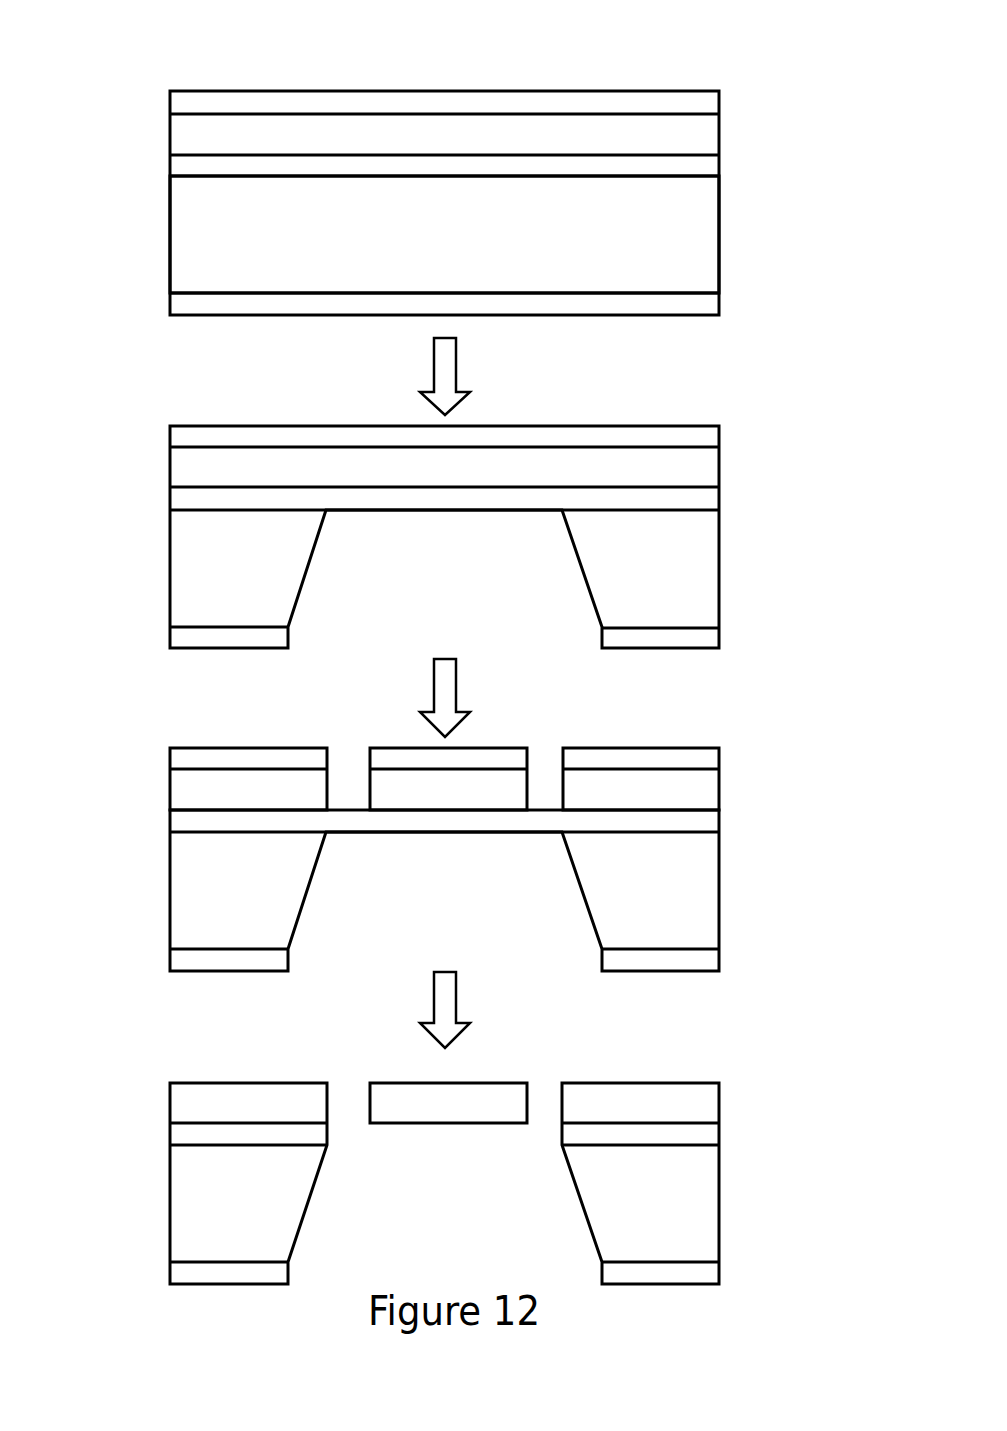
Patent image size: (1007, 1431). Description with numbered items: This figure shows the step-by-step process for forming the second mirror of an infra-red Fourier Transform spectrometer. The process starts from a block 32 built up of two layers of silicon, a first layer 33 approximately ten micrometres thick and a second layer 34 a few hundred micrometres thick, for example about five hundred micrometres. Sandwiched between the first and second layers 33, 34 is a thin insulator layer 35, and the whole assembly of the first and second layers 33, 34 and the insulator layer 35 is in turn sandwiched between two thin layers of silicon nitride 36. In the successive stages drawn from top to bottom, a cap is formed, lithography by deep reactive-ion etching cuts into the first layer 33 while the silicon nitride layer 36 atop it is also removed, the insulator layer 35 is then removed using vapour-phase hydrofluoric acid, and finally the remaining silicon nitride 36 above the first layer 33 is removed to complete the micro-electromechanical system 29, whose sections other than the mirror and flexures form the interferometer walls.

The micro-electromechanical system (MEMS) 29 is at (740, 1090).
The block 32 is at (449, 179).
The first layer 33 is at (178, 136).
The second layer 34 is at (178, 238).
The insulator layer 35 is at (700, 166).
The silicon nitride layer 36 is at (366, 101).